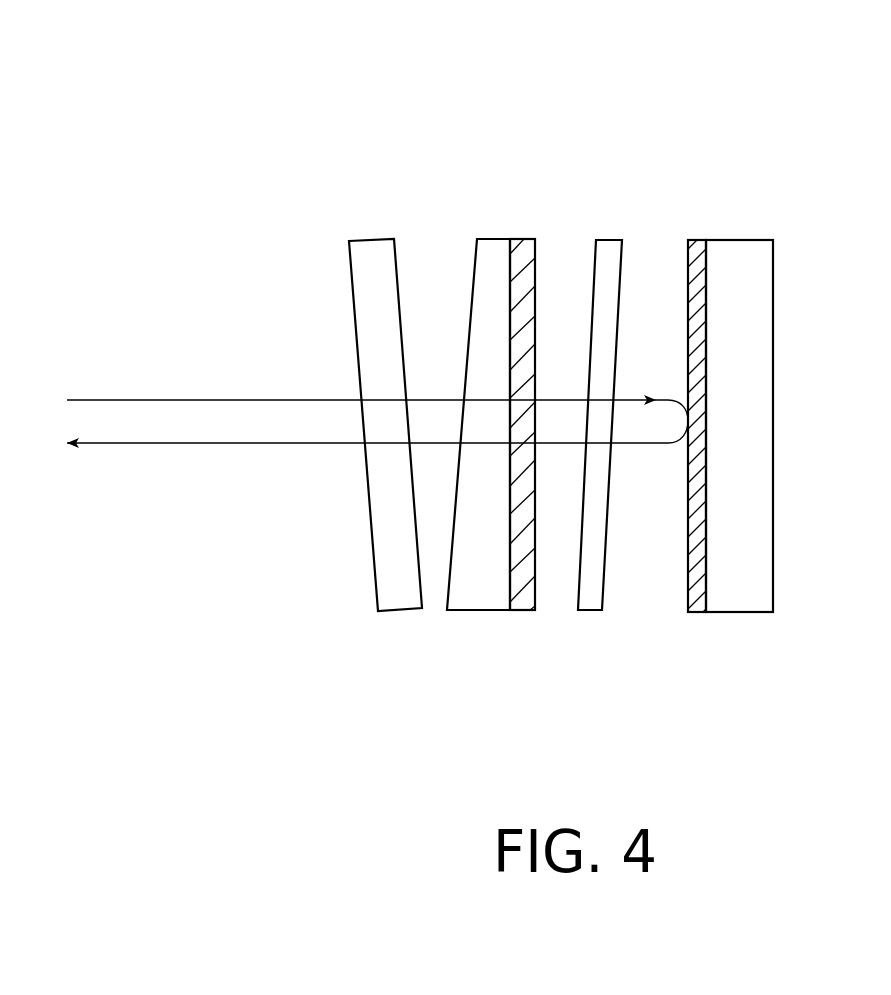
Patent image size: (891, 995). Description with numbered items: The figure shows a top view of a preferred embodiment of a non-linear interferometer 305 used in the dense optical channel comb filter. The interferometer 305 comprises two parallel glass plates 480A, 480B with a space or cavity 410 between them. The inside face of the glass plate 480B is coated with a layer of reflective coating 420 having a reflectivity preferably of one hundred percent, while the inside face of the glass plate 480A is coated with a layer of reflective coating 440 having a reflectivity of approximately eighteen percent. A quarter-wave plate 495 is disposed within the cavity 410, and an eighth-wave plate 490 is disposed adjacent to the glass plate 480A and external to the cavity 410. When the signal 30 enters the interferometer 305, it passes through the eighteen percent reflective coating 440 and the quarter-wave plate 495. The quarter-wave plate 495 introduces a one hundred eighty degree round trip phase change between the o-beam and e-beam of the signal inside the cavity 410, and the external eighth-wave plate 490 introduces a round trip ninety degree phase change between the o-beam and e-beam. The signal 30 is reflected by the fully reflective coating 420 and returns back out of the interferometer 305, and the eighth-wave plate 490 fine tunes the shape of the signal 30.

The interferometer 305 is at (627, 51).
The signal 30 is at (170, 400).
The λ/8 plate 490 is at (401, 613).
The glass plate 480A is at (488, 237).
The reflective coating 440 is at (524, 238).
The λ/4 plate 495 is at (588, 613).
The reflective coating 420 is at (698, 238).
The glass plate 480B is at (745, 238).
The cavity 410 is at (645, 503).